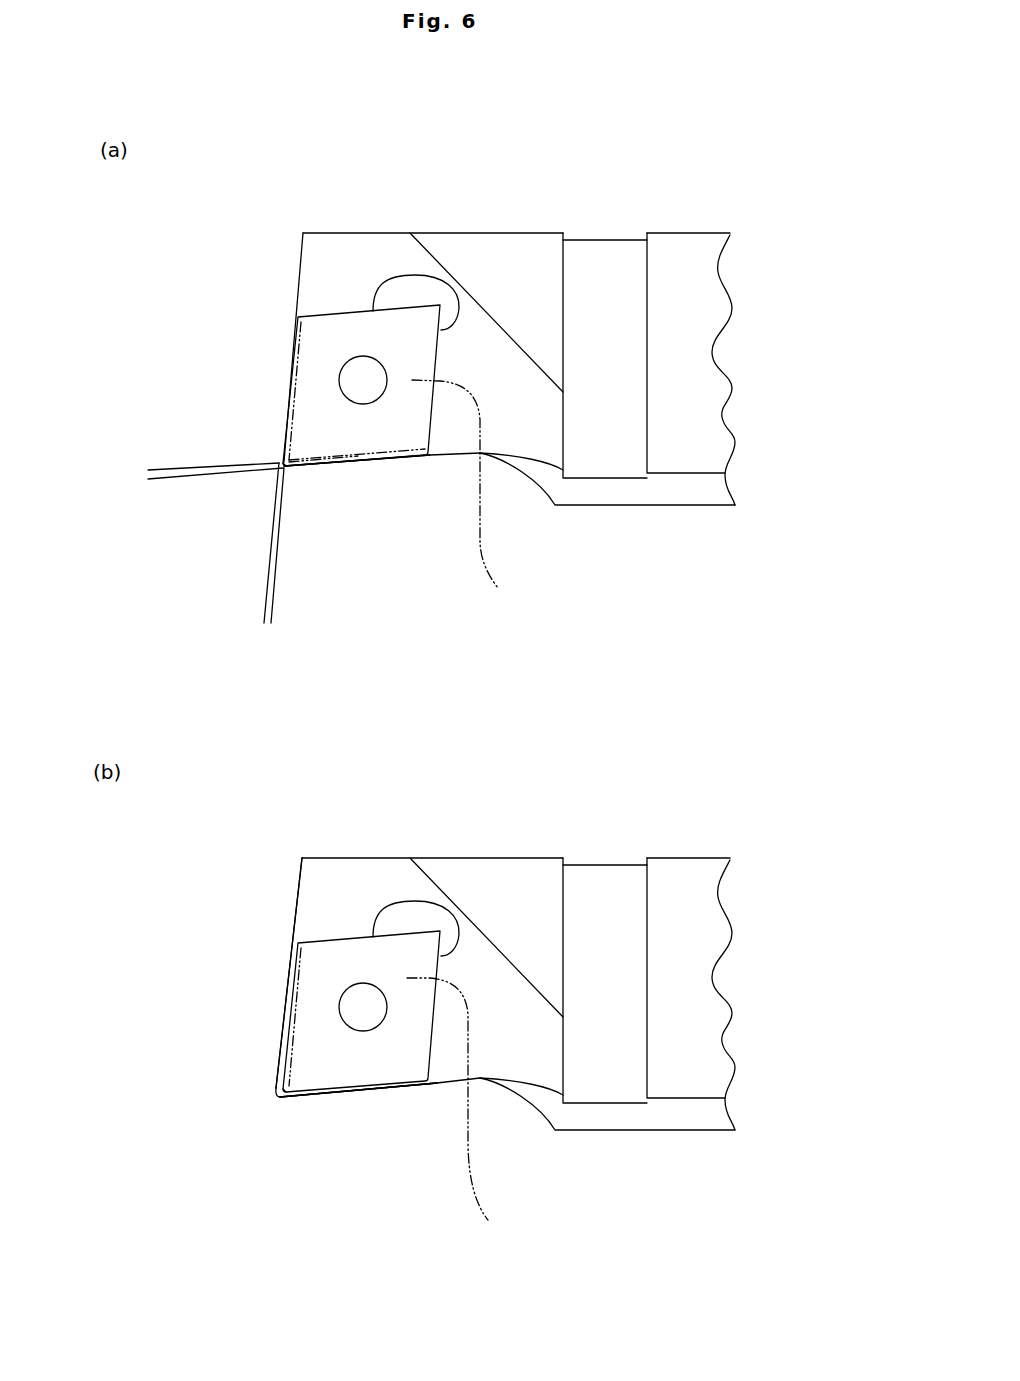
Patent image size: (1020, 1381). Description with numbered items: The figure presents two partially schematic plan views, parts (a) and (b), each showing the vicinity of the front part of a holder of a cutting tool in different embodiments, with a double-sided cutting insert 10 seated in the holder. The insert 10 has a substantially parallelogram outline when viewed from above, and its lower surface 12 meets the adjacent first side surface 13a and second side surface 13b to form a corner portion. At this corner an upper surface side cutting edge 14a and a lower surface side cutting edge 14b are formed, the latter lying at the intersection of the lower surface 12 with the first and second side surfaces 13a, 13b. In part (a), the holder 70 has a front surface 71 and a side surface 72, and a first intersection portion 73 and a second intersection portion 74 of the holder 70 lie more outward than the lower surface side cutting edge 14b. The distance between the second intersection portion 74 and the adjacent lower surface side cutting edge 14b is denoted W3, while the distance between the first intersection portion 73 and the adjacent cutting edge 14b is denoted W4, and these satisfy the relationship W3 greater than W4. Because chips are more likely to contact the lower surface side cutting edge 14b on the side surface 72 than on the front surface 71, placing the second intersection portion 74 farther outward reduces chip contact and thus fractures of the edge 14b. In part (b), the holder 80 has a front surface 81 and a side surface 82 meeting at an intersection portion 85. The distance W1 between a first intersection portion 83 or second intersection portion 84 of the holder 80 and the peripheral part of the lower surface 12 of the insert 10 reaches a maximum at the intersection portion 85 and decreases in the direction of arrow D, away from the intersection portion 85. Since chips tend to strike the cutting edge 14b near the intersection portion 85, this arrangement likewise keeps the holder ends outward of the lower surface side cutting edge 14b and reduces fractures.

The insert 10 is at (402, 775).
The lower surface 12 is at (323, 382).
The first side surface 13a is at (287, 395).
The second side surface 13b is at (358, 463).
The upper surface side cutting edge 14a is at (194, 817).
The lower surface side cutting edge 14b is at (277, 467).
The holder 70 is at (591, 515).
The front surface 71 is at (282, 423).
The side surface 72 is at (327, 467).
The first intersection portion 73 is at (292, 350).
The second intersection portion 74 is at (383, 462).
The holder 80 is at (595, 1141).
The front surface 81 is at (280, 1042).
The side surface 82 is at (340, 1092).
The first intersection portion 83 is at (287, 990).
The second intersection portion 84 is at (368, 1090).
The intersection portion 85 is at (275, 1103).
The distance W1 is at (307, 1053).
The distance W3 is at (163, 523).
The distance W4 is at (300, 595).
The arrow D is at (307, 1040).